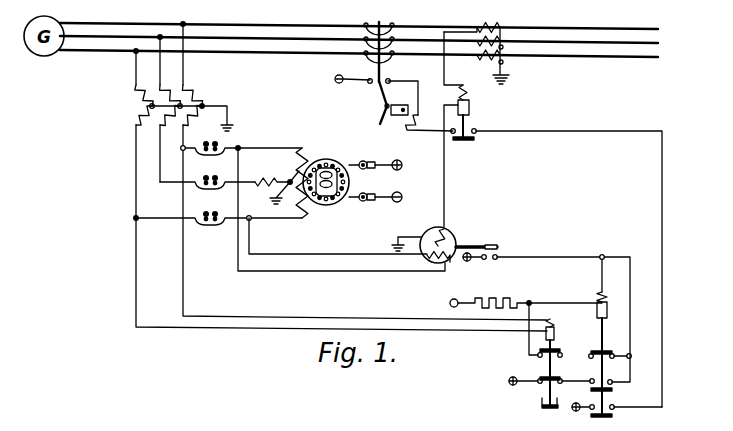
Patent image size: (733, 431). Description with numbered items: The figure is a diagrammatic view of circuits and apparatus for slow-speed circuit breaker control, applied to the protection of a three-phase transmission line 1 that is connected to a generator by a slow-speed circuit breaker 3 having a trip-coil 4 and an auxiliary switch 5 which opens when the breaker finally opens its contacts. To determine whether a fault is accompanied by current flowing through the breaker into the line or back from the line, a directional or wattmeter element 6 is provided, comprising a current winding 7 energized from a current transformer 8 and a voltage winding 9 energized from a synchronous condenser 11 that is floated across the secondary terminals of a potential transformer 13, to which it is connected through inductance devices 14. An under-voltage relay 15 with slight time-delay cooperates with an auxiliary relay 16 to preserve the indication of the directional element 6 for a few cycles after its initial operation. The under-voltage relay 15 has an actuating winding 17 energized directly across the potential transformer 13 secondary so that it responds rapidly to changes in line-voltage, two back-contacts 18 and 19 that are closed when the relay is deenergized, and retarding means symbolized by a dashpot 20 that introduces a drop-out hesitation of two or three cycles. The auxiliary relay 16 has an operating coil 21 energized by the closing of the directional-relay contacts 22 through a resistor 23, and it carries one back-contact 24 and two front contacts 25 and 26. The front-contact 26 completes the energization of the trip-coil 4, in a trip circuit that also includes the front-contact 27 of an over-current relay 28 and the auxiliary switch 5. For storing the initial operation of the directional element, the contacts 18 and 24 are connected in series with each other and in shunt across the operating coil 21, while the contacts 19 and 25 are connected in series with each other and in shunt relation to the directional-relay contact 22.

The transmission line 1 is at (645, 29).
The slow-speed circuit breaker 3 is at (393, 58).
The trip-coil 4 is at (400, 131).
The auxiliary switch 5 is at (369, 83).
The directional element 6 is at (451, 233).
The current winding 7 is at (437, 231).
The current transformer 8 is at (503, 27).
The voltage winding 9 is at (428, 258).
The synchronous condenser 11 is at (331, 148).
The potential transformer 13 is at (203, 96).
The inductance devices 14 is at (209, 225).
The under-voltage relay 15 is at (551, 364).
The auxiliary relay 16 is at (617, 350).
The actuating winding 17 is at (556, 323).
The back-contact 18 is at (562, 357).
The back-contact 19 is at (562, 383).
The dashpot 20 is at (540, 398).
The operating coil 21 is at (608, 297).
The directional-relay contacts 22 is at (484, 263).
The resistor 23 is at (503, 298).
The back-contact 24 is at (594, 350).
The front-contact 25 is at (613, 385).
The front-contact 26 is at (615, 410).
The front-contact 27 is at (478, 134).
The over-current relay 28 is at (471, 97).